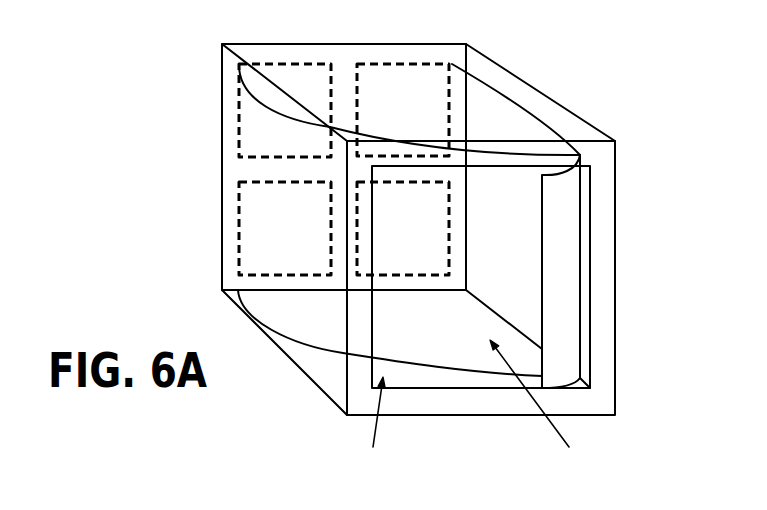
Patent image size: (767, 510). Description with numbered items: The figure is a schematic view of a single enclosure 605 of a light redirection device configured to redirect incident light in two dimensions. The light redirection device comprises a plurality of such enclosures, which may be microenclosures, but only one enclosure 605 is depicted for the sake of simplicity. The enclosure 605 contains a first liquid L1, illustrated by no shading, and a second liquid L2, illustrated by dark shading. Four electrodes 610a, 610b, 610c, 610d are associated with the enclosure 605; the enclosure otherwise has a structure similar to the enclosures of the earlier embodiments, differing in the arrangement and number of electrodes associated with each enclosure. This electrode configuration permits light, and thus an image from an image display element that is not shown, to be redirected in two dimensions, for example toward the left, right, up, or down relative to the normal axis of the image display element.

The enclosure 605 is at (530, 84).
The electrode 610a is at (247, 120).
The electrode 610b is at (440, 116).
The electrode 610c is at (247, 227).
The electrode 610d is at (430, 239).
The first liquid L1 is at (375, 426).
The second liquid L2 is at (536, 407).